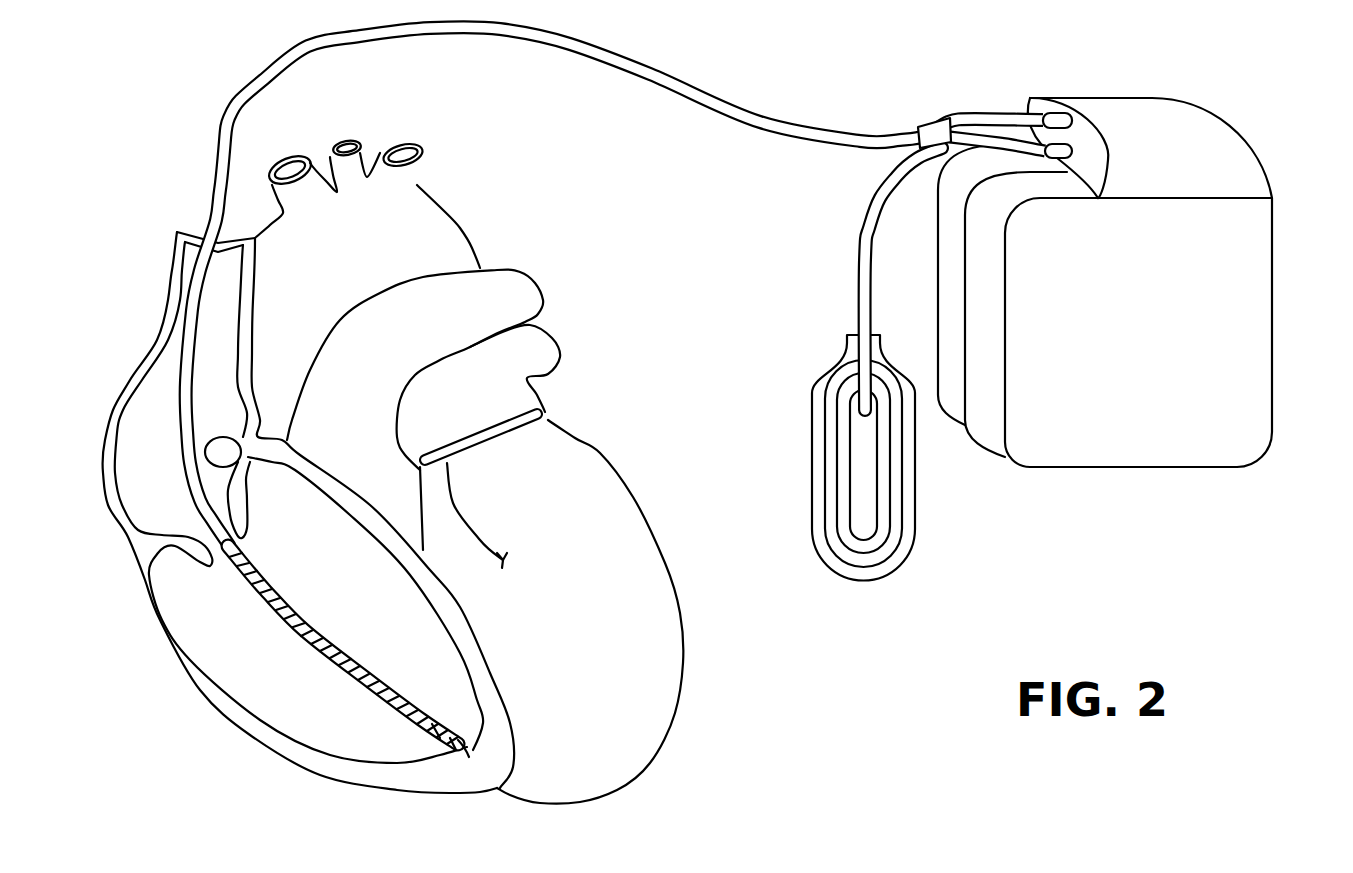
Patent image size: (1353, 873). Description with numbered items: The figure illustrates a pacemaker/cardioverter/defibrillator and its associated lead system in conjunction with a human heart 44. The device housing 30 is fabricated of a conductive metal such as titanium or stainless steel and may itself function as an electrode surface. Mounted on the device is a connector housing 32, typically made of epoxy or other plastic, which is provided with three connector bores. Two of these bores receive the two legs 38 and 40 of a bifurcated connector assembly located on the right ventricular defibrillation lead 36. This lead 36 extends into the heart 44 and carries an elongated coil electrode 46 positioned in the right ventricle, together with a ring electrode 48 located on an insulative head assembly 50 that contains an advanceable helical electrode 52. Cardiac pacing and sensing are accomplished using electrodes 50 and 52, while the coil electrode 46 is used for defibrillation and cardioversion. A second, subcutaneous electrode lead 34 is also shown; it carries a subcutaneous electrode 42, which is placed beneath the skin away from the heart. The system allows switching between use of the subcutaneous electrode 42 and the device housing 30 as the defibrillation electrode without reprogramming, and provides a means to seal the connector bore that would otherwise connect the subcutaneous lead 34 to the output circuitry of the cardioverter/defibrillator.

The device housing 30 is at (1192, 323).
The connector housing 32 is at (1150, 123).
The subcutaneous electrode lead 34 is at (952, 118).
The right ventricular defibrillation lead 36 is at (663, 79).
The leg of bifurcated connector assembly 38 is at (1113, 137).
The leg of bifurcated connector assembly 40 is at (1077, 177).
The subcutaneous electrode 42 is at (907, 468).
The human heart 44 is at (580, 453).
The elongated coil electrode 46 is at (300, 640).
The ring electrode 48 is at (430, 733).
The insulative head assembly 50 is at (447, 748).
The advanceable helical electrode 52 is at (473, 753).